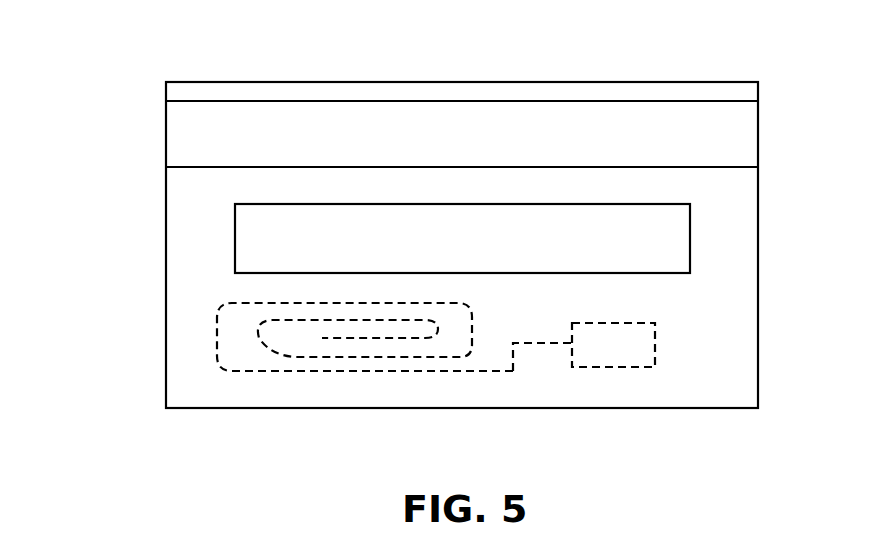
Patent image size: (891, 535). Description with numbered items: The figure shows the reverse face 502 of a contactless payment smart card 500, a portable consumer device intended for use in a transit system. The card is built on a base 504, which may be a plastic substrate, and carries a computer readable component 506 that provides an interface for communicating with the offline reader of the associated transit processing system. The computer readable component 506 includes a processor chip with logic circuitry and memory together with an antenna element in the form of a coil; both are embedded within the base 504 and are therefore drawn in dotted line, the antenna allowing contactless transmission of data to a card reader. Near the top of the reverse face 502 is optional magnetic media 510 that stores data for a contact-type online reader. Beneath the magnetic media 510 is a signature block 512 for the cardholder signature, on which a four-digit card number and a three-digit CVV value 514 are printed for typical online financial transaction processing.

The contactless payment smart card 500 is at (138, 429).
The reverse face 502 is at (195, 289).
The base 504 is at (691, 80).
The computer readable component 506 is at (186, 340).
The magnetic media 510 is at (188, 147).
The signature block 512 is at (249, 234).
The CVV value 514 is at (657, 259).